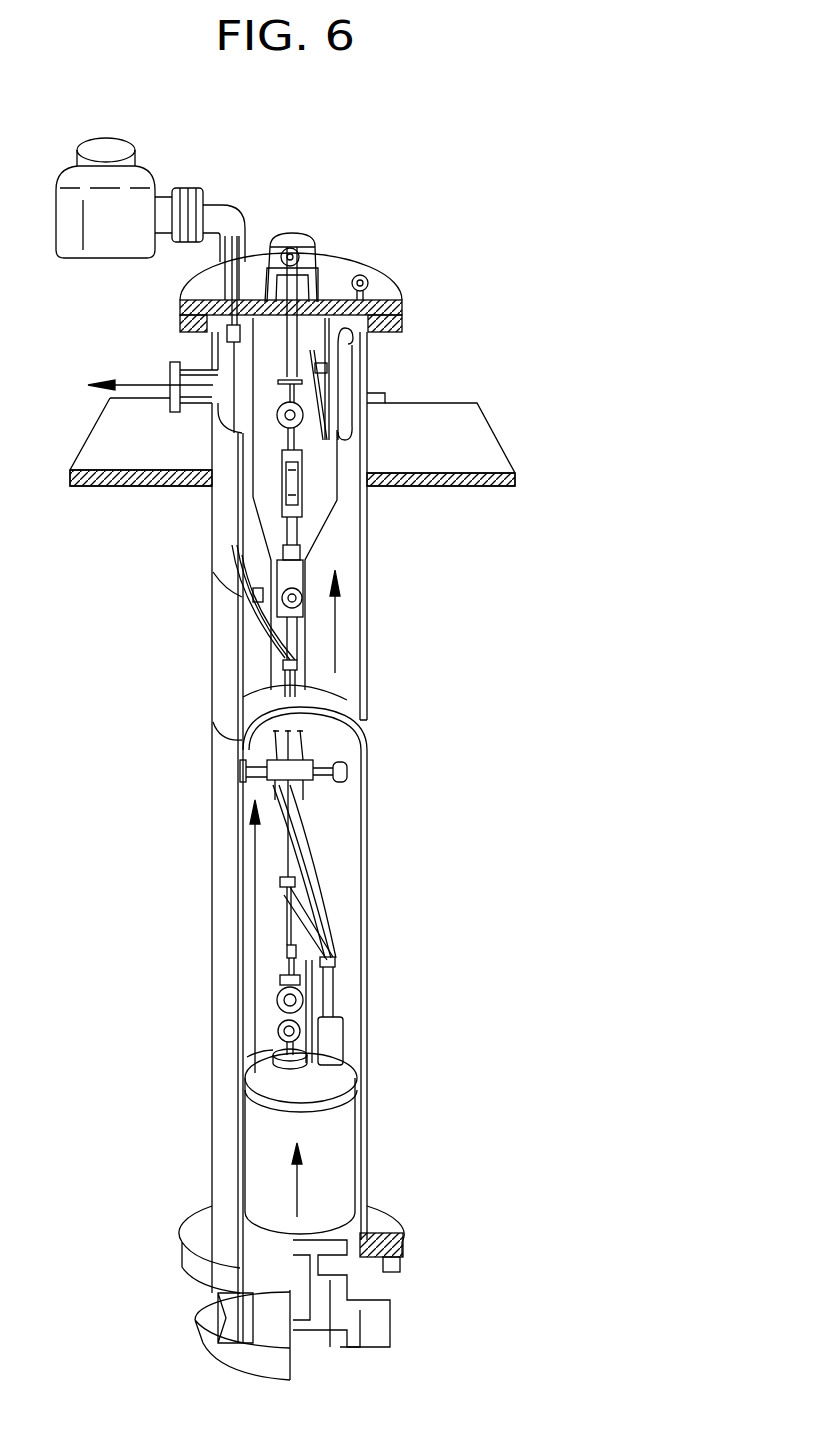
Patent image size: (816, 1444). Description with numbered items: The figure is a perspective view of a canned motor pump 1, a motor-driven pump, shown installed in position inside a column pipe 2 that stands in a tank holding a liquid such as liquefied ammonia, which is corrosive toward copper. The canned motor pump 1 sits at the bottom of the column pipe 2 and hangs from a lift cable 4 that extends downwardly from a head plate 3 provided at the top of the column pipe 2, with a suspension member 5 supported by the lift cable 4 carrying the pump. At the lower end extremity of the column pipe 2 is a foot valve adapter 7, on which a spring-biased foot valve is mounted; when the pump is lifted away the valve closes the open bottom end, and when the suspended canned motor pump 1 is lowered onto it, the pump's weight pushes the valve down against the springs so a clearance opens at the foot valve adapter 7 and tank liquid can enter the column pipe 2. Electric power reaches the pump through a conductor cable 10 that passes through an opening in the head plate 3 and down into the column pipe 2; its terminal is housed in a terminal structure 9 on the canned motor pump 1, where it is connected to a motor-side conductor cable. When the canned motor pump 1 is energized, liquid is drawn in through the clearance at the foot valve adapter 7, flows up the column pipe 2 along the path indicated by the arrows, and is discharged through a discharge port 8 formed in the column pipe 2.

The canned motor pump 1 is at (353, 1140).
The column pipe 2 is at (367, 815).
The head plate 3 is at (340, 272).
The lift cable 4 is at (320, 540).
The suspension member 5 is at (290, 952).
The foot valve adapter 7 is at (403, 1253).
The discharge port 8 is at (203, 367).
The terminal structure 9 is at (327, 1040).
The conductor cable 10 is at (330, 998).